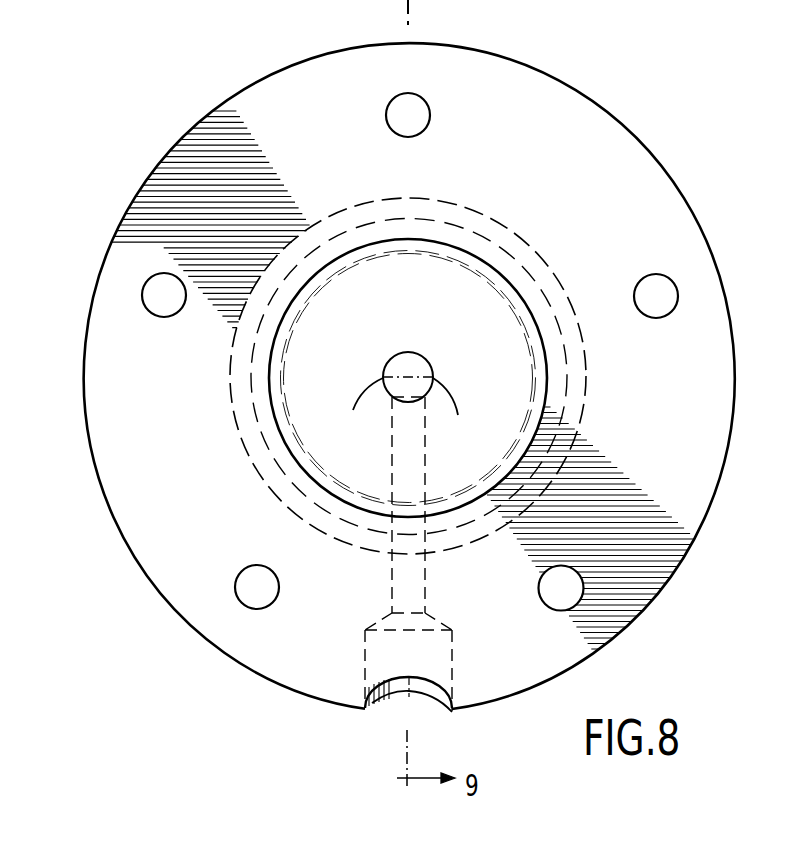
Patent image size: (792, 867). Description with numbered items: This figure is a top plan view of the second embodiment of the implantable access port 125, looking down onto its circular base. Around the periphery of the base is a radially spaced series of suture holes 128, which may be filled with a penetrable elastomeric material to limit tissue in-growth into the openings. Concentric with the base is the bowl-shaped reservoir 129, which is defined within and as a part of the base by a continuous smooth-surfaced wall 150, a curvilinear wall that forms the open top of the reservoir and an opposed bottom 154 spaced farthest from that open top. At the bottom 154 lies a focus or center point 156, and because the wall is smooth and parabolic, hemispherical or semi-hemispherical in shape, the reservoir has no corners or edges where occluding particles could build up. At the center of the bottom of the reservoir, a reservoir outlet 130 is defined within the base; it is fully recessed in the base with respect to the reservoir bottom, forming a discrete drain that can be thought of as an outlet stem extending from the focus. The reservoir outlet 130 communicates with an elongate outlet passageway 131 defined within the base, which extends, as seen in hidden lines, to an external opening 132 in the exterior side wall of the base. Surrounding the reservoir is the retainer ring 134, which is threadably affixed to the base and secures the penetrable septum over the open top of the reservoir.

The implantable access port 125 is at (682, 89).
The suture holes 128 is at (165, 292).
The bowl-shaped reservoir 129 is at (491, 361).
The reservoir outlet 130 is at (400, 368).
The outlet passageway 131 is at (408, 590).
The external opening 132 is at (385, 694).
The retainer ring 134 is at (512, 255).
The continuous smooth-surfaced wall 150 is at (500, 395).
The bottom 154 is at (463, 413).
The focus or center point 156 is at (350, 411).